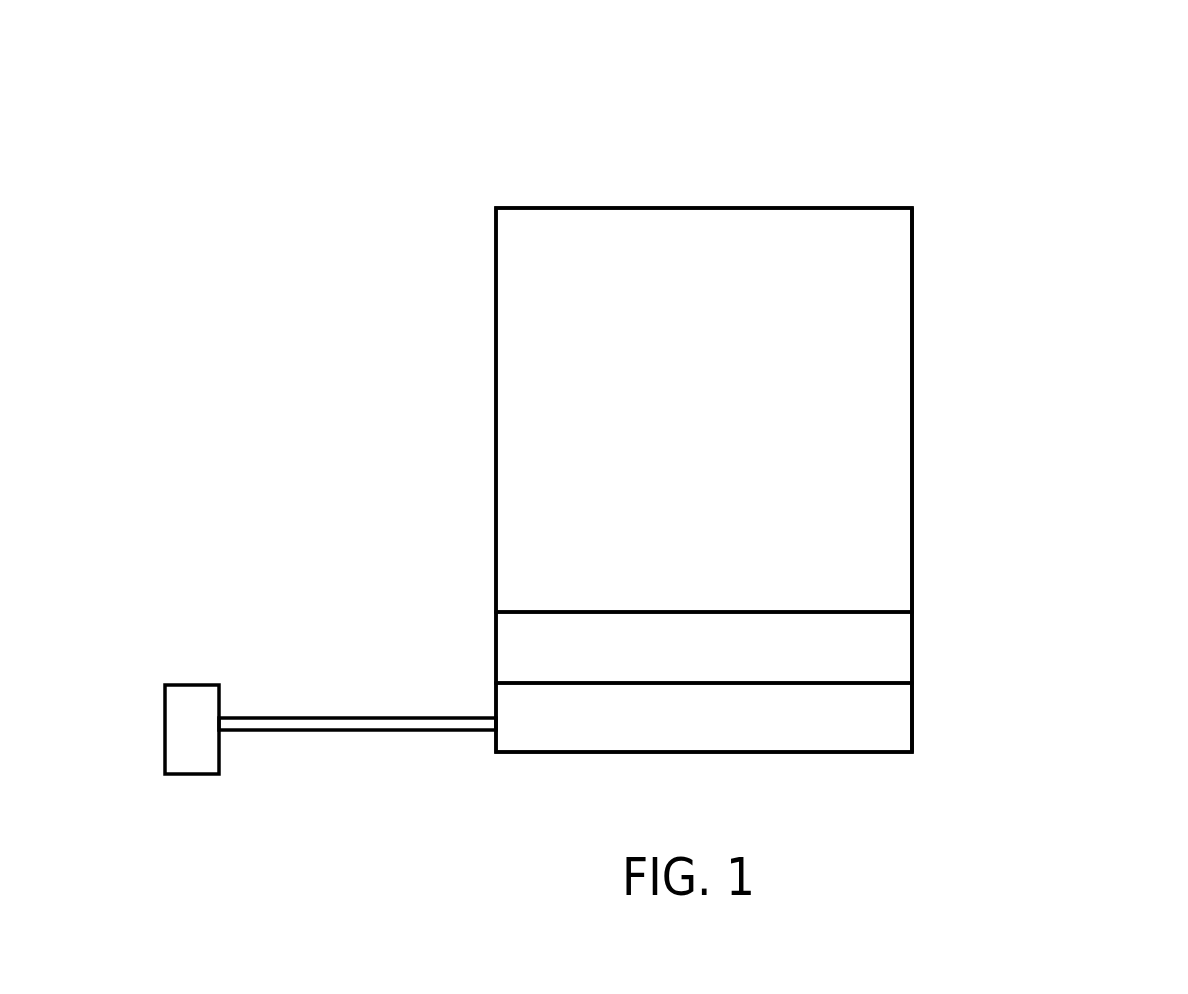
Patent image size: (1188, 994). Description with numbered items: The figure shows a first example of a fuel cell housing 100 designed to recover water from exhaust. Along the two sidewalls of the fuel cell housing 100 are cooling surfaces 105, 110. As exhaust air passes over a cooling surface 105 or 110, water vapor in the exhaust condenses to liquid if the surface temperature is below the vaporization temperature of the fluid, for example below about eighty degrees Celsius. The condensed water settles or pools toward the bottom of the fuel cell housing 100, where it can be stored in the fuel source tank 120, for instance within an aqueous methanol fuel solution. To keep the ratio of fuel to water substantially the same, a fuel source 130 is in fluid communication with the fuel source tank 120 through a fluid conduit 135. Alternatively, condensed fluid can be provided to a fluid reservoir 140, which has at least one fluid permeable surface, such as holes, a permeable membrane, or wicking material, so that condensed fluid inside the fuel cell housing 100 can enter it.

The fuel cell housing 100 is at (738, 172).
The cooling surface 105 is at (496, 455).
The cooling surface 110 is at (913, 452).
The fuel source tank 120 is at (896, 733).
The fuel source 130 is at (183, 703).
The fluid conduit 135 is at (375, 732).
The fluid reservoir 140 is at (878, 663).